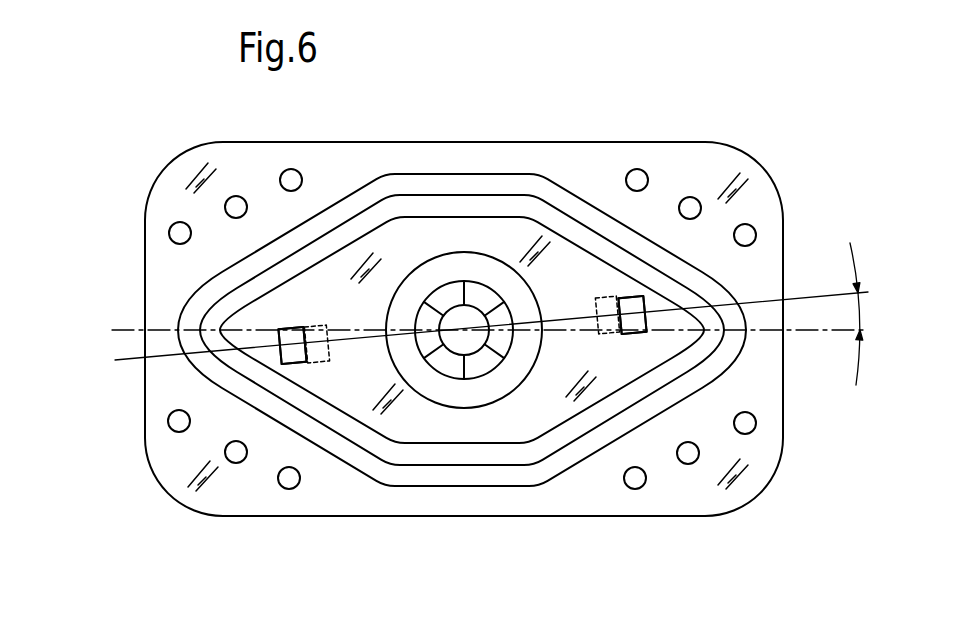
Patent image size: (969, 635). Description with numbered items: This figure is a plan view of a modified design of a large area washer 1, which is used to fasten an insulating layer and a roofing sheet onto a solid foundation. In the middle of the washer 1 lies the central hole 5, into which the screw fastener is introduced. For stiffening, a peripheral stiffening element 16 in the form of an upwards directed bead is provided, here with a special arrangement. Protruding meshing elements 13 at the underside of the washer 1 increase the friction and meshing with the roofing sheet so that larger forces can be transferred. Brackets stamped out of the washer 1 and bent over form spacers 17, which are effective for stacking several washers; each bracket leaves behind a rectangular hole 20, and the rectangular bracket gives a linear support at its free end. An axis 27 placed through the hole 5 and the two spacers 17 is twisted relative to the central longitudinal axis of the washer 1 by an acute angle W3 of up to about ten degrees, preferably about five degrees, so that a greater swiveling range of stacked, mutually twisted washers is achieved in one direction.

The washer 1 is at (740, 125).
The central hole 5 is at (467, 317).
The meshing elements 13 is at (291, 180).
The stiffening element 16 is at (405, 185).
The spacers 17 is at (605, 303).
The hole 20 is at (283, 356).
The axis 27 is at (805, 297).
The acute angle W3 is at (881, 314).